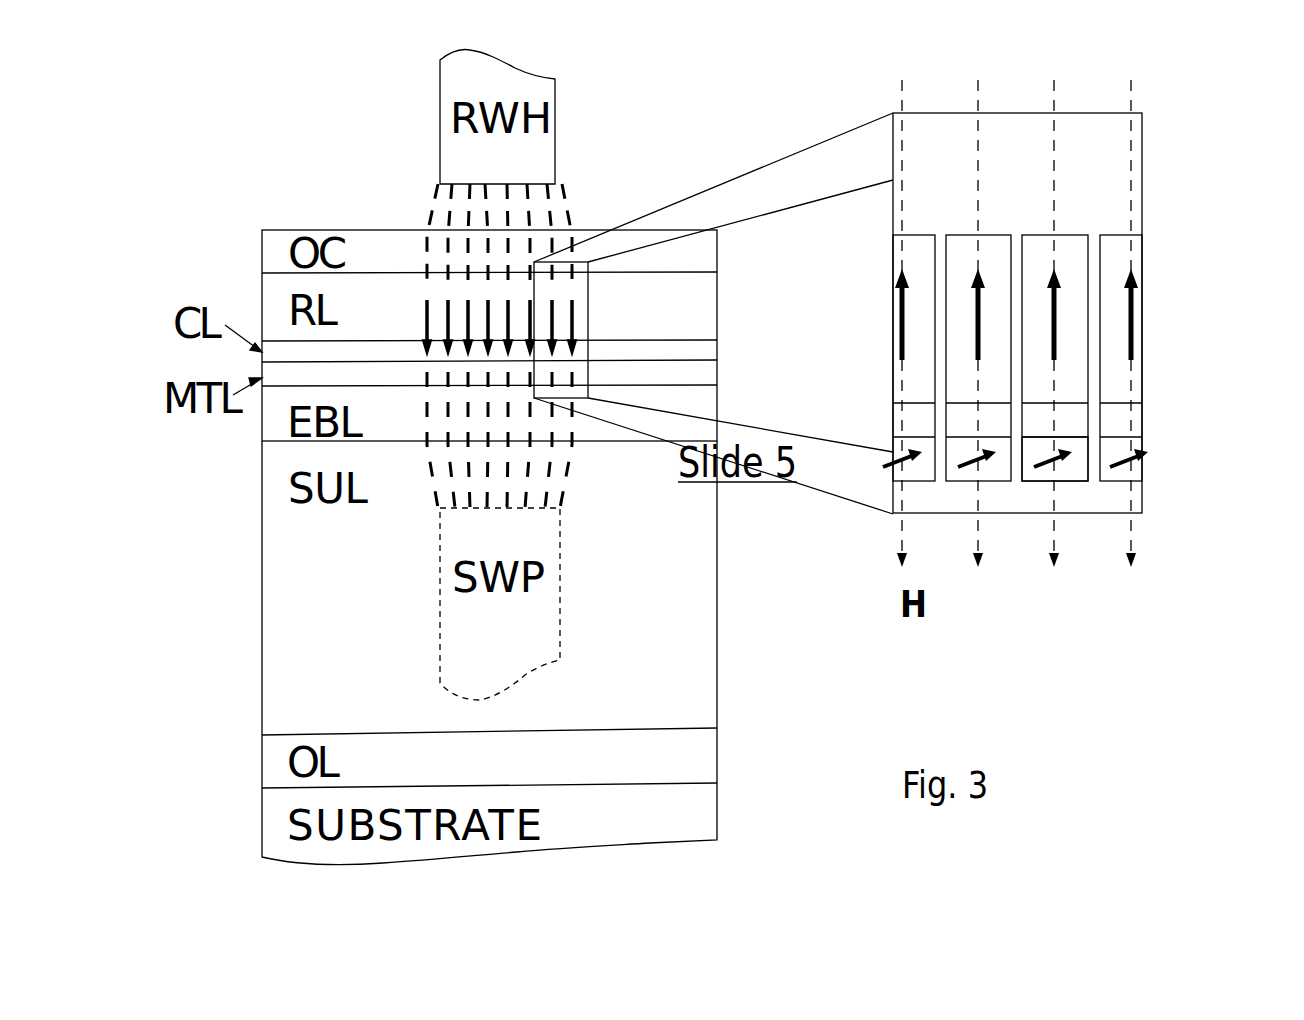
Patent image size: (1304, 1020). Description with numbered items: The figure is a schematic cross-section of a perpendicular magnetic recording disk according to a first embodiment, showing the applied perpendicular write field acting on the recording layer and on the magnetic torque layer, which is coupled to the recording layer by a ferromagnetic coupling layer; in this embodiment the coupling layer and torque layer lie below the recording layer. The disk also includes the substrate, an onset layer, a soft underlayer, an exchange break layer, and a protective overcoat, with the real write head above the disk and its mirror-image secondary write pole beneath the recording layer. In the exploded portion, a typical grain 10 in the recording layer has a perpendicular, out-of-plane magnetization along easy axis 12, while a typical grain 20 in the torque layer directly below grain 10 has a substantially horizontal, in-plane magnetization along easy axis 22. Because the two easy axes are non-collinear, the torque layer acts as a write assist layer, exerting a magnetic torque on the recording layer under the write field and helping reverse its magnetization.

The grain 10 is at (1073, 270).
The easy axis 12 is at (1057, 305).
The grain 20 is at (1078, 468).
The easy axis 22 is at (1037, 468).